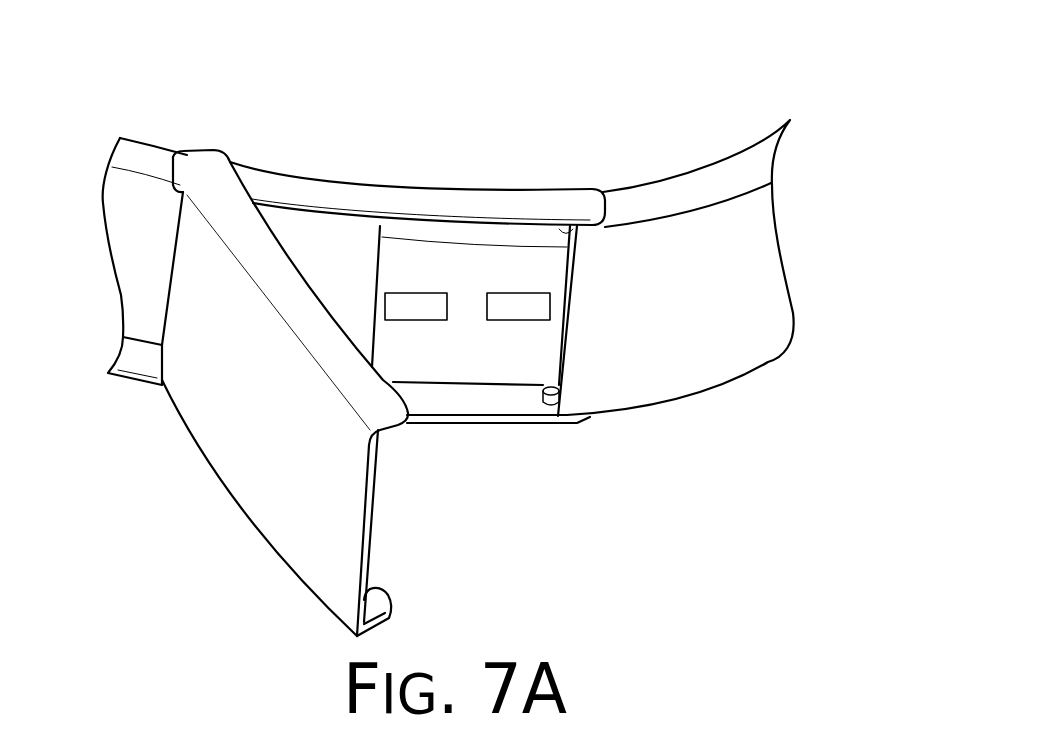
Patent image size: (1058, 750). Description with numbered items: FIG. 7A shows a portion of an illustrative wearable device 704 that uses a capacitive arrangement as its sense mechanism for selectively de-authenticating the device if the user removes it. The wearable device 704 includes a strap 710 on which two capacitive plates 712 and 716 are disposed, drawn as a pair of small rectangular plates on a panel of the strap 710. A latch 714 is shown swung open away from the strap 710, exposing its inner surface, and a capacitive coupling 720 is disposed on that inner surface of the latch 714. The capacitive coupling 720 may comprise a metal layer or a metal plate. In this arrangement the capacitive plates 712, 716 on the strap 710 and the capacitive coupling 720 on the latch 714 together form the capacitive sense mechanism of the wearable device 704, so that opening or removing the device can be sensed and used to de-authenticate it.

The wearable device 704 is at (757, 62).
The strap 710 is at (773, 362).
The capacitive plate 712 is at (515, 293).
The latch 714 is at (227, 427).
The capacitive plate 716 is at (420, 293).
The capacitive coupling 720 is at (373, 487).